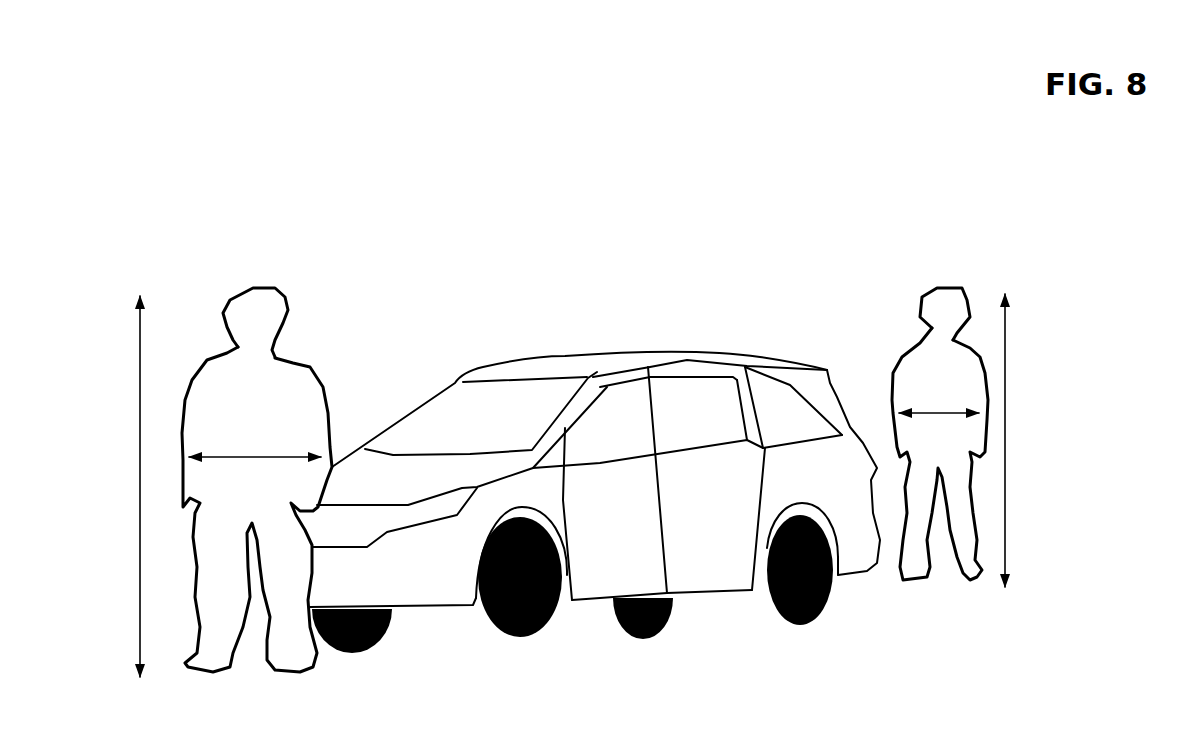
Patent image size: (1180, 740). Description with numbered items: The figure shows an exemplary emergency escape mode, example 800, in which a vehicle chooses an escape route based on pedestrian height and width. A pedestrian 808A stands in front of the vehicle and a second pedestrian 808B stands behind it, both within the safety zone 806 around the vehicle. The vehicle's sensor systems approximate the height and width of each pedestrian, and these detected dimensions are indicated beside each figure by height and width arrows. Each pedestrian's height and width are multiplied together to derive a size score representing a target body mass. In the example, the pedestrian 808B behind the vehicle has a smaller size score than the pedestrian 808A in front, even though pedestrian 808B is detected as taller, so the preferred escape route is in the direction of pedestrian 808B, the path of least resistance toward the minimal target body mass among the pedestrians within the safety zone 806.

The example 800 is at (437, 110).
The safety zone 806 is at (567, 356).
The pedestrian 808A is at (253, 302).
The pedestrian 808B is at (937, 290).